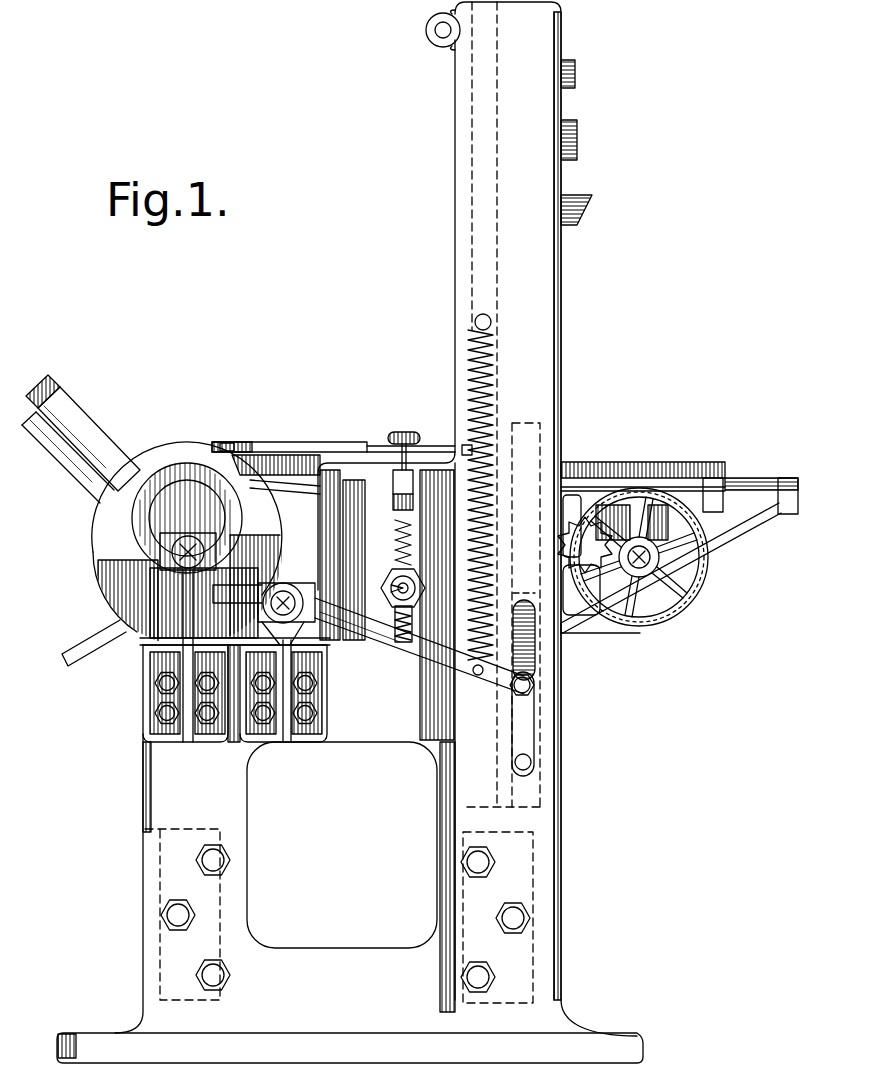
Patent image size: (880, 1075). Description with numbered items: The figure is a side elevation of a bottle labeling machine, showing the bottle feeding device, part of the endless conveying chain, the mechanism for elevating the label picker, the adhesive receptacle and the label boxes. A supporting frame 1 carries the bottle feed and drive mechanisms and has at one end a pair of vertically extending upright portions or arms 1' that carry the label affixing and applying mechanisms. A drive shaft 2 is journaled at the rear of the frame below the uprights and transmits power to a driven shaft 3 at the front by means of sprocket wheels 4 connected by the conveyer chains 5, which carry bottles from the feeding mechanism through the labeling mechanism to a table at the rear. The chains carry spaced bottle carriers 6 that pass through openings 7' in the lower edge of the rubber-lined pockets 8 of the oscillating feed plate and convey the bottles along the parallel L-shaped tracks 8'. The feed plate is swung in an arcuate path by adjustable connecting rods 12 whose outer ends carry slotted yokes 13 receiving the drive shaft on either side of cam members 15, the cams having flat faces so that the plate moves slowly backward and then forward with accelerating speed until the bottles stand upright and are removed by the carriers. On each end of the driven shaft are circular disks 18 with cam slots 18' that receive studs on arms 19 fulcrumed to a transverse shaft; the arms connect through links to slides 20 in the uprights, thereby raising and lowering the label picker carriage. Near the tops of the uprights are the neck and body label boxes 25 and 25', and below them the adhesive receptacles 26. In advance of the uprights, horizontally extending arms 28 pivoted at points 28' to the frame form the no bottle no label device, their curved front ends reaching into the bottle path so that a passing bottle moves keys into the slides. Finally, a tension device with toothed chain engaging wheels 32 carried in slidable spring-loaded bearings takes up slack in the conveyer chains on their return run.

The supporting frame 1 is at (350, 757).
The upright portions or arms 1' is at (508, 501).
The drive shaft 2 is at (664, 600).
The driven shaft 3 is at (178, 562).
The sprocket wheels 4 is at (700, 590).
The conveyer chains 5 is at (708, 573).
The bottle carriers 6 is at (88, 655).
The openings 7' is at (68, 455).
The pockets 8 is at (83, 426).
The L-shaped tracks 8' is at (643, 533).
The connecting rods 12 is at (292, 498).
The yokes 13 is at (587, 522).
The cam members 15 is at (718, 540).
The circular disks 18 is at (153, 537).
The cam slots 18' is at (187, 493).
The arms 19 is at (432, 672).
The slides 20 is at (536, 660).
The neck label box 25 is at (589, 74).
The body label box 25' is at (589, 140).
The adhesive receptacles 26 is at (591, 203).
The horizontally extending arms 28 is at (333, 436).
The pivot points 28' is at (405, 487).
The toothed chain engaging wheels 32 is at (410, 500).